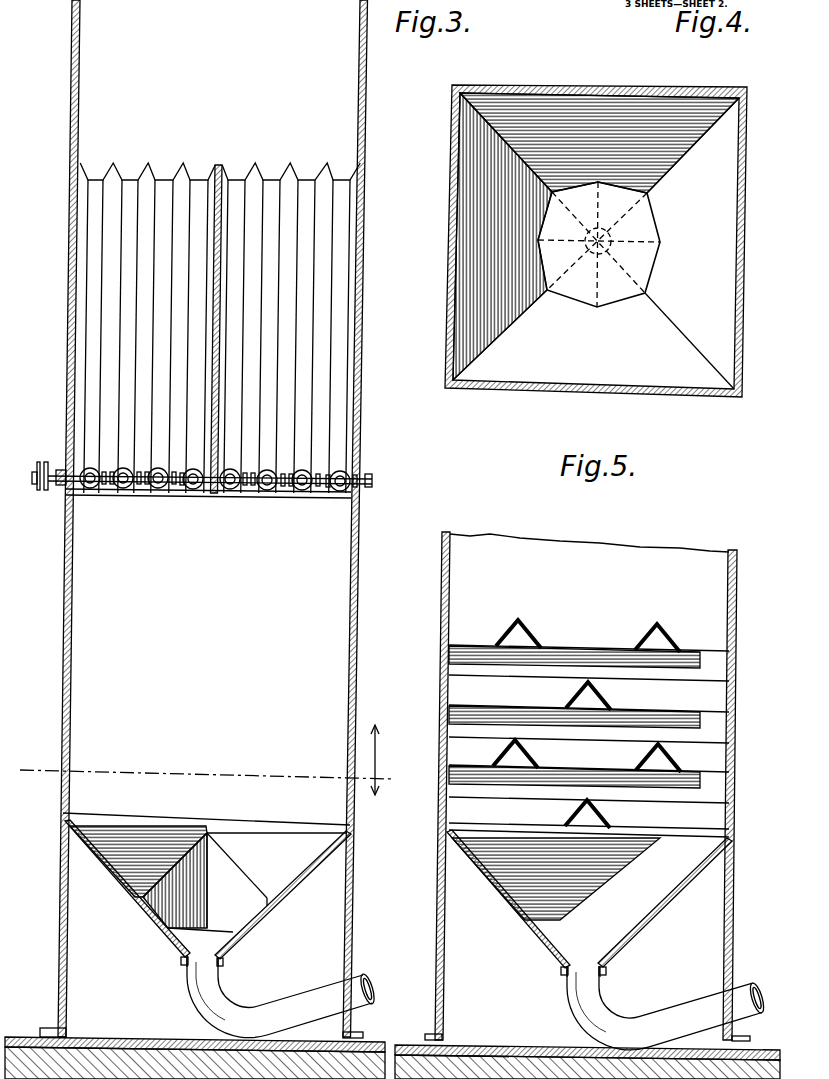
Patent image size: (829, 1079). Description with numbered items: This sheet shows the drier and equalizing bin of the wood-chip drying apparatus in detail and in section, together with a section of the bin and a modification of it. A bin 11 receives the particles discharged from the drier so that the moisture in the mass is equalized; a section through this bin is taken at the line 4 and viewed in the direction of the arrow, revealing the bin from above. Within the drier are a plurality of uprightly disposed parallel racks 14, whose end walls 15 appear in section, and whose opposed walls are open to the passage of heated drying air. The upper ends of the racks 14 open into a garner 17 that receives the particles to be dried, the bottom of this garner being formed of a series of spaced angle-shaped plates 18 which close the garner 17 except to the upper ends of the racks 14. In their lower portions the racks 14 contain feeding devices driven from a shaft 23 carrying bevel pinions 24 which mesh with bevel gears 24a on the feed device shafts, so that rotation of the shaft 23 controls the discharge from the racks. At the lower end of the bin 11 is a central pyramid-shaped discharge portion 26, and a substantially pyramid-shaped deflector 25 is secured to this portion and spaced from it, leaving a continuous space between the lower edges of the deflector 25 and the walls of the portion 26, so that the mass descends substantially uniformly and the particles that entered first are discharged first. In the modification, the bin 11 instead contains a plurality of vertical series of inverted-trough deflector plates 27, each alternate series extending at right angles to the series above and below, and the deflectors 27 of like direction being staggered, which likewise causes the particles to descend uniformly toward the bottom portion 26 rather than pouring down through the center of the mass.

In FIG. 3, the bin 11 is at (358, 613).
In FIG. 4, the bin 11 is at (743, 313).
In FIG. 5, the bin 11 is at (587, 786).
In FIG. 3, the racks 14 is at (167, 190).
In FIG. 3, the end walls 15 is at (307, 230).
In FIG. 3, the garner 17 is at (337, 125).
In FIG. 3, the angle-shaped plates 18 is at (287, 167).
In FIG. 3, the shaft 23 is at (48, 492).
In FIG. 3, the bevel pinions 24 is at (112, 492).
In FIG. 3, the bevel gears 24a is at (187, 497).
In FIG. 3, the pyramid-shaped deflector 25 is at (248, 877).
In FIG. 4, the pyramid-shaped deflector 25 is at (625, 195).
In FIG. 3, the discharge portion 26 is at (140, 902).
In FIG. 4, the discharge portion 26 is at (596, 241).
In FIG. 5, the discharge portion 26 is at (606, 936).
In FIG. 5, the deflector plates 27 is at (520, 620).
In FIG. 3, the section line 4 is at (213, 760).